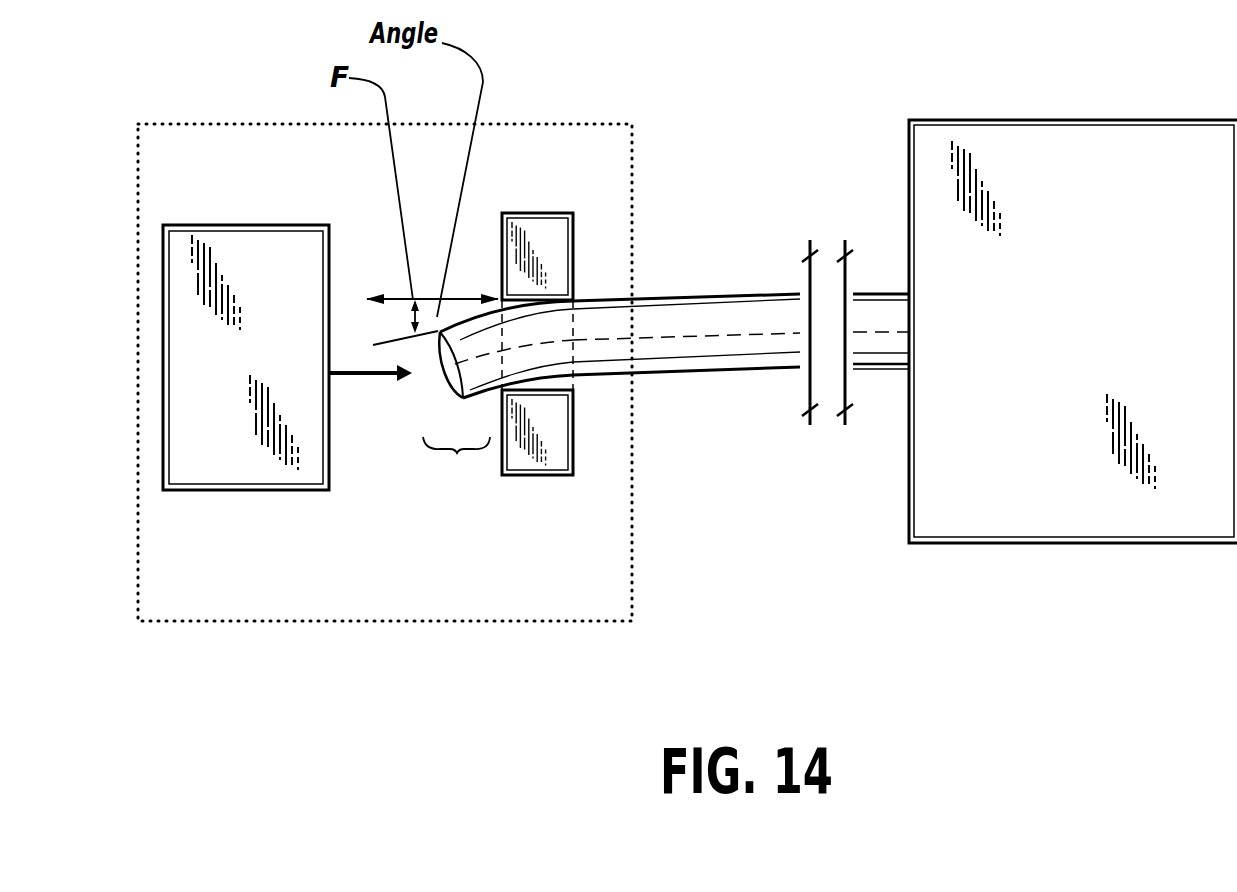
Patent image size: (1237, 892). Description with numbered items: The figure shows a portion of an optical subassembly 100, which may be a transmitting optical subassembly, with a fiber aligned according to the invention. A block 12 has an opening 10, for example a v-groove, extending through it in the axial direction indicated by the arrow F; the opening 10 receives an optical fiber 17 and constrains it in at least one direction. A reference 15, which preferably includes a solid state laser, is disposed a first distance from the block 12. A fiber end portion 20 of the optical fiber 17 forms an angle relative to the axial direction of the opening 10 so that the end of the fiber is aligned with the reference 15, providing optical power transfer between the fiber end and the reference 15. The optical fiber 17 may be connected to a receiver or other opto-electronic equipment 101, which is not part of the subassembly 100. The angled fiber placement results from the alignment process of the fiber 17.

The optical subassembly 100 is at (512, 125).
The reference 15 is at (232, 441).
The optical fiber 17 is at (702, 315).
The opening 10 is at (577, 383).
The block 12 is at (542, 463).
The fiber end portion 20 is at (459, 460).
The opto-electronic equipment 101 is at (1104, 365).